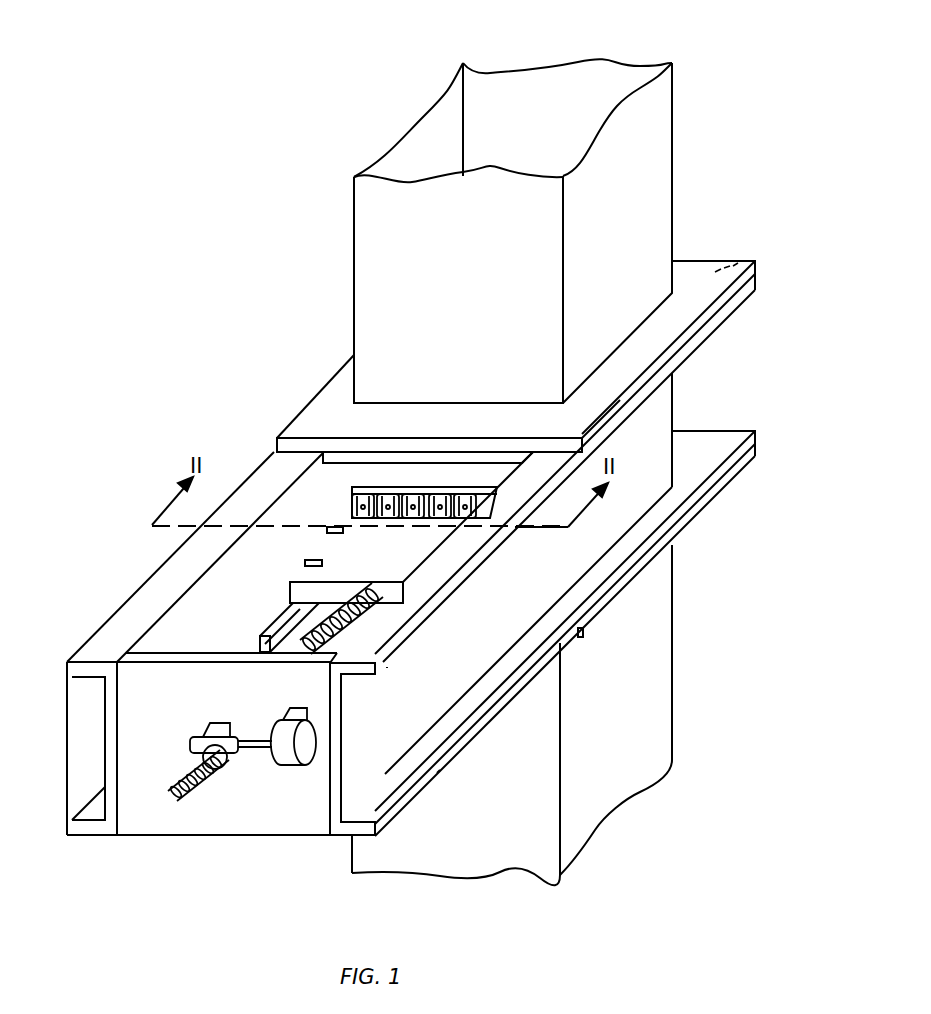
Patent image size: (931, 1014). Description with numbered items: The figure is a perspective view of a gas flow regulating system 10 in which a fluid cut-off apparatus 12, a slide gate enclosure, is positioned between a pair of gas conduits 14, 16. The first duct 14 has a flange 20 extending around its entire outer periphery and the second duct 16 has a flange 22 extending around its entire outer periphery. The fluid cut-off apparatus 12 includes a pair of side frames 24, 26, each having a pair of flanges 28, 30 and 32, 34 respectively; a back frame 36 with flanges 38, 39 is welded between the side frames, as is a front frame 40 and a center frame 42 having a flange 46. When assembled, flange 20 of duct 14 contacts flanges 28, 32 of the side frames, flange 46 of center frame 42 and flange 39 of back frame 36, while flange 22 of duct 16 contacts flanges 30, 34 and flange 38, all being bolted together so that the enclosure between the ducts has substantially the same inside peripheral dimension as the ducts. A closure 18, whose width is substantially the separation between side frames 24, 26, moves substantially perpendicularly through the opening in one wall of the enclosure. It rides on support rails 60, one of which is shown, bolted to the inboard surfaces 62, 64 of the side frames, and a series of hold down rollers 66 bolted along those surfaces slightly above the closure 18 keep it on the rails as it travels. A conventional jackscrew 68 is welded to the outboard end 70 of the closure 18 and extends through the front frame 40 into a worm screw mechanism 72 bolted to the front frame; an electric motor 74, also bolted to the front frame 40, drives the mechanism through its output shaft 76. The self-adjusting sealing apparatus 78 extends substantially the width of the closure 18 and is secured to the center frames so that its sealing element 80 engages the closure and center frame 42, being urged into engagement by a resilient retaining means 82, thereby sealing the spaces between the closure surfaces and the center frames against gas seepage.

The gas flow regulating system 10 is at (246, 196).
The fluid cut-off apparatus 12 is at (139, 584).
The gas conduit 14 is at (672, 146).
The second conduit 16 is at (670, 724).
The closure 18 is at (447, 588).
The flange 20 is at (690, 262).
The flange 22 is at (703, 512).
The side frame 24 is at (100, 753).
The side frame 26 is at (350, 770).
The flange 28 is at (67, 656).
The flange 30 is at (80, 838).
The flange 32 is at (387, 667).
The flange 34 is at (437, 773).
The back frame 36 is at (672, 393).
The flange 38 is at (717, 430).
The flange 39 is at (740, 262).
The front frame 40 is at (118, 838).
The center frame 42 is at (277, 452).
The flange 46 is at (348, 458).
The support rail 60 is at (260, 634).
The inboard surface 62 is at (158, 634).
The inboard surface 64 is at (380, 606).
The hold down rollers 66 is at (310, 562).
The jackscrew 68 is at (195, 800).
The outboard end 70 is at (335, 533).
The worm screw mechanism 72 is at (235, 760).
The electric motor 74 is at (300, 770).
The output shaft 76 is at (240, 737).
The self-adjusting sealing apparatus 78 is at (384, 489).
The sealing element 80 is at (430, 522).
The resilient retaining means 82 is at (440, 497).